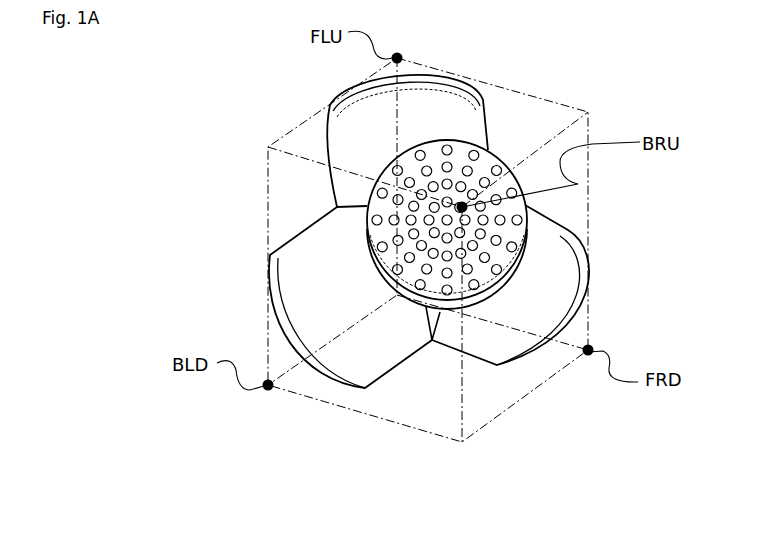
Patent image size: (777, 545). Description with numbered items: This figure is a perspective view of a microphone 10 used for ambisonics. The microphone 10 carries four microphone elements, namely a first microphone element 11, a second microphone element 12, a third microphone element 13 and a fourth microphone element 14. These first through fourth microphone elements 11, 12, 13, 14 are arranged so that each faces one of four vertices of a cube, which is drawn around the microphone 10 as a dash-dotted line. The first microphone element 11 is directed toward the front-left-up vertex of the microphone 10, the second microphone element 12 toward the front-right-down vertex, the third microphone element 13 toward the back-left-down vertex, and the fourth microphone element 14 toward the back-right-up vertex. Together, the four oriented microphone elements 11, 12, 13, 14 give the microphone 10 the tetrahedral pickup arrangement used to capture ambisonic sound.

The microphone 10 is at (286, 100).
The first microphone element 11 is at (460, 102).
The second microphone element 12 is at (572, 267).
The third microphone element 13 is at (290, 260).
The fourth microphone element 14 is at (433, 292).